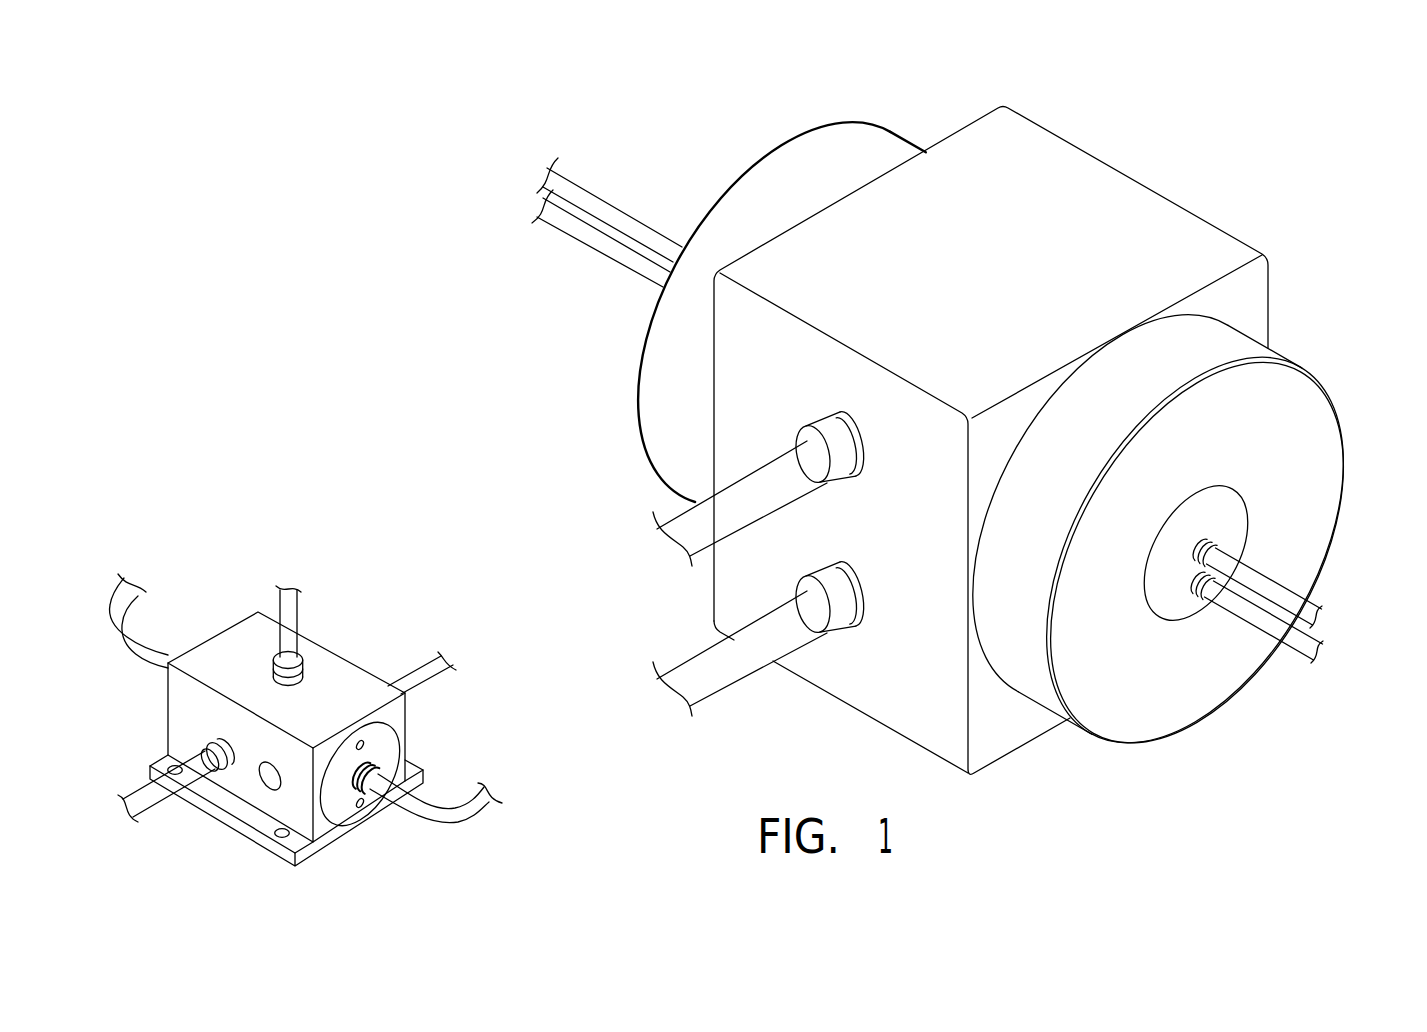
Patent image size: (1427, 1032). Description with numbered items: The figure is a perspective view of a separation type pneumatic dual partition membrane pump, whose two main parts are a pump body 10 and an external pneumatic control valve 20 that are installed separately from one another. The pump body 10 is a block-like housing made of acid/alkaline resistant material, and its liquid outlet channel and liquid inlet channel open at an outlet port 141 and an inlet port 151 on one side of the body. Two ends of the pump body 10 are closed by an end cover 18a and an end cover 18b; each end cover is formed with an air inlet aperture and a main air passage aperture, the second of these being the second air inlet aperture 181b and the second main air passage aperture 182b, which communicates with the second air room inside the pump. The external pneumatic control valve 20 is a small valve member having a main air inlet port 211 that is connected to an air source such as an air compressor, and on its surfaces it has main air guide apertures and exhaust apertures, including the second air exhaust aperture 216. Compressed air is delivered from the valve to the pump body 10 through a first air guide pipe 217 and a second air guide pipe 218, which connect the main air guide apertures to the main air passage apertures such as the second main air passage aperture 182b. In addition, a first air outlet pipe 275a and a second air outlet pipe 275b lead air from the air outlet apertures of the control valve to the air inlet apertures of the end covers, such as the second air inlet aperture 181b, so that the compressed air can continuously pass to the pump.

The pump body 10 is at (1135, 207).
The end cover 18a is at (770, 173).
The end cover 18b is at (1303, 398).
The second air inlet aperture 181b is at (1204, 545).
The second main air passage aperture 182b is at (1200, 601).
The outlet port 141 is at (838, 435).
The inlet port 151 is at (840, 578).
The first air guide pipe 217 is at (597, 203).
The second air guide pipe 218 is at (1279, 645).
The first air outlet pipe 275a is at (583, 235).
The second air outlet pipe 275b is at (1283, 600).
The external pneumatic control valve 20 is at (322, 660).
The main air inlet port 211 is at (277, 668).
The second air exhaust aperture 216 is at (263, 770).